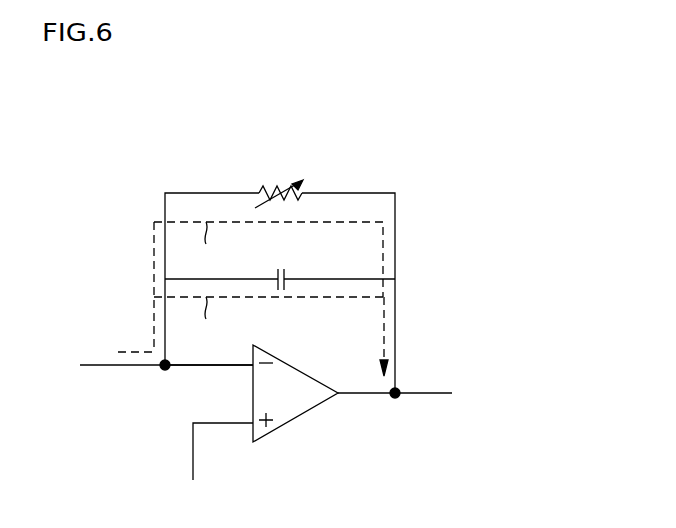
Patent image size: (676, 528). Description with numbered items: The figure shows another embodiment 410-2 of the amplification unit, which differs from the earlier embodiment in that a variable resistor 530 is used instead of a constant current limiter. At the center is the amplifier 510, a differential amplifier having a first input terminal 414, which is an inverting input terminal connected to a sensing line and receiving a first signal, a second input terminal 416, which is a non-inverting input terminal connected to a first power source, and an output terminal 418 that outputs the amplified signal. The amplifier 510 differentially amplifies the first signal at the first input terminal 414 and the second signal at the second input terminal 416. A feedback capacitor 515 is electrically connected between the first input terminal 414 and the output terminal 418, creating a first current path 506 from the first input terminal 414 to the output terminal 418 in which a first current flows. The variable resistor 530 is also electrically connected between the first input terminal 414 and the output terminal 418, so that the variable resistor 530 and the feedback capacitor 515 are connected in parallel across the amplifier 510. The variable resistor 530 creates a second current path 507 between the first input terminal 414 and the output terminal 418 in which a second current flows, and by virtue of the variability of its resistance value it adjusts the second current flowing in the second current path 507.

The amplification unit 410-2 is at (416, 149).
The variable resistor 530 is at (258, 192).
The second current path 507 is at (383, 222).
The first current path 506 is at (384, 297).
The feedback capacitor 515 is at (290, 272).
The amplifier 510 is at (296, 371).
The first input terminal 414 is at (222, 368).
The second input terminal 416 is at (222, 425).
The output terminal 418 is at (370, 396).